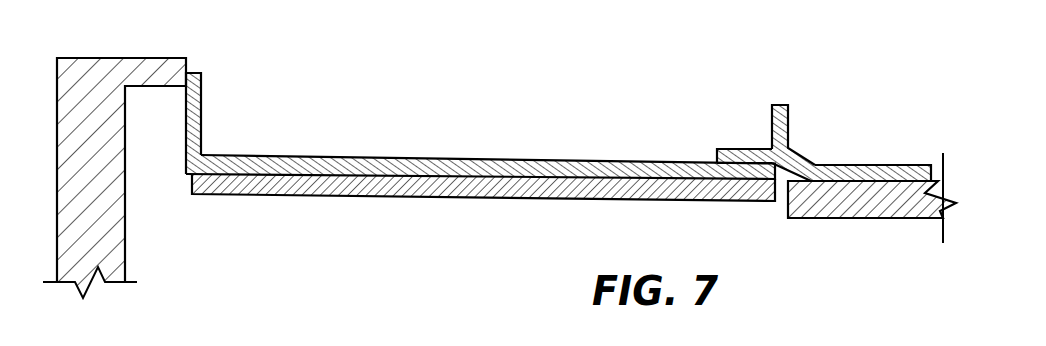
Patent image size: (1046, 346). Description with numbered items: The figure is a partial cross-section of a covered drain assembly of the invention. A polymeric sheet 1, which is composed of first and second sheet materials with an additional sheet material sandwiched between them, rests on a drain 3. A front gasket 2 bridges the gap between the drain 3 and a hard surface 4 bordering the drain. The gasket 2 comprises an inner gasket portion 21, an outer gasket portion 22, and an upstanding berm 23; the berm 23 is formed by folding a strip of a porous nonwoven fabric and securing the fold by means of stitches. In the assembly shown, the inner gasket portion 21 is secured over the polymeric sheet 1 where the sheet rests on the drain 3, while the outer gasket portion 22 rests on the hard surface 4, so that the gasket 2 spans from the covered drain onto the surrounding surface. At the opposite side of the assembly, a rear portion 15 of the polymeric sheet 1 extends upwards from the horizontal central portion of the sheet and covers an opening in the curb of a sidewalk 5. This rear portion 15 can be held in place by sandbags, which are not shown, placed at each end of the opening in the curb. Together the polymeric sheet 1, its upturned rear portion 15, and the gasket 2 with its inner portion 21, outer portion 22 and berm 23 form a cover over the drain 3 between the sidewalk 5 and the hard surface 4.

The polymeric sheet 1 is at (469, 159).
The gasket 2 is at (810, 115).
The drain 3 is at (468, 200).
The hard surface 4 is at (868, 219).
The sidewalk 5 is at (125, 252).
The rear edge portion 15 is at (205, 110).
The inner gasket portion 21 is at (722, 148).
The outer gasket portion 22 is at (853, 165).
The upstanding berm 23 is at (779, 104).